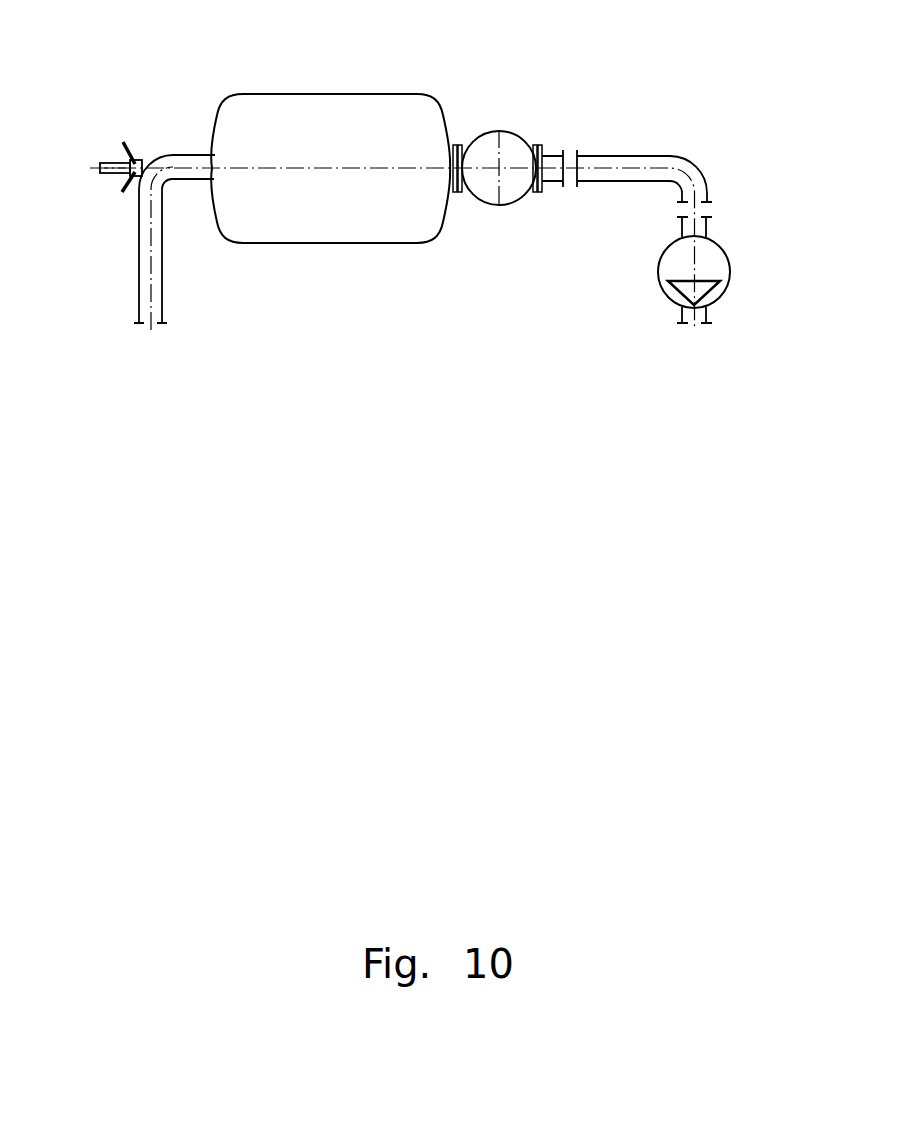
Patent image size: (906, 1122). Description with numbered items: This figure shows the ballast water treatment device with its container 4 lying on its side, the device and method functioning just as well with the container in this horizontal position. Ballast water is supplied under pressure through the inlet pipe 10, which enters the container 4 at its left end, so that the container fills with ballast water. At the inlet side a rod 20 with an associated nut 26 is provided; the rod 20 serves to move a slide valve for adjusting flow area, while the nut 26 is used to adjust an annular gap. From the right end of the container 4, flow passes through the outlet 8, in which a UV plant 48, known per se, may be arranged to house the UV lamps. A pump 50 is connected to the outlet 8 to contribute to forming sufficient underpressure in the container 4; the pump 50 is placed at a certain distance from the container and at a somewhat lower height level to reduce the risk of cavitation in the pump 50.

The rod 20 is at (120, 163).
The nut 26 is at (125, 152).
The inlet pipe 10 is at (185, 163).
The container 4 is at (297, 118).
The UV plant 48 is at (487, 150).
The outlet 8 is at (555, 165).
The pump 50 is at (700, 253).